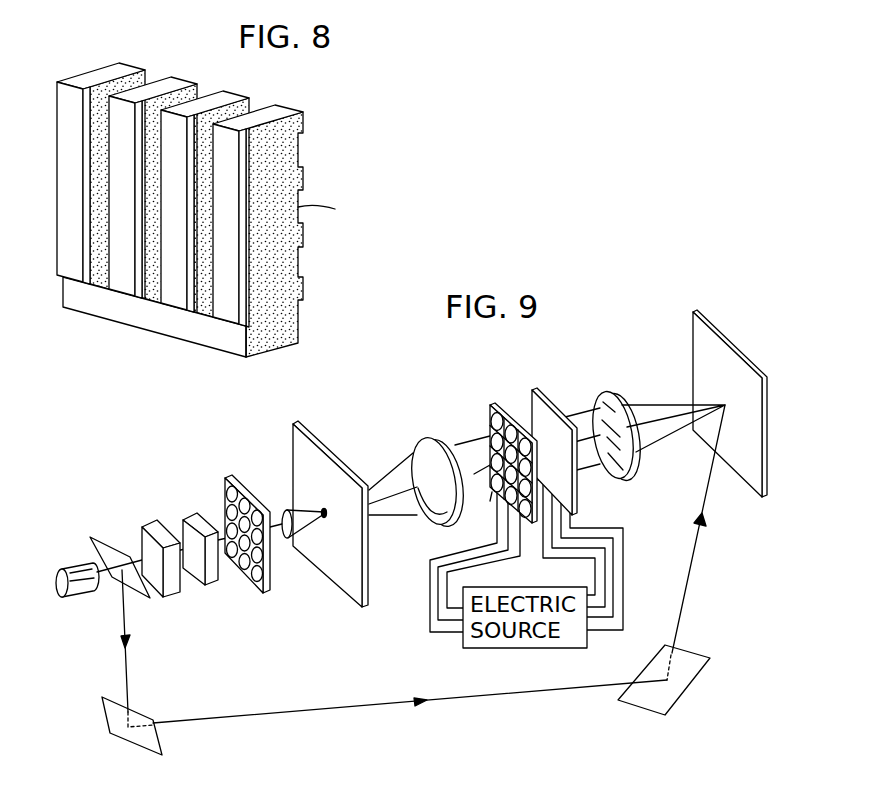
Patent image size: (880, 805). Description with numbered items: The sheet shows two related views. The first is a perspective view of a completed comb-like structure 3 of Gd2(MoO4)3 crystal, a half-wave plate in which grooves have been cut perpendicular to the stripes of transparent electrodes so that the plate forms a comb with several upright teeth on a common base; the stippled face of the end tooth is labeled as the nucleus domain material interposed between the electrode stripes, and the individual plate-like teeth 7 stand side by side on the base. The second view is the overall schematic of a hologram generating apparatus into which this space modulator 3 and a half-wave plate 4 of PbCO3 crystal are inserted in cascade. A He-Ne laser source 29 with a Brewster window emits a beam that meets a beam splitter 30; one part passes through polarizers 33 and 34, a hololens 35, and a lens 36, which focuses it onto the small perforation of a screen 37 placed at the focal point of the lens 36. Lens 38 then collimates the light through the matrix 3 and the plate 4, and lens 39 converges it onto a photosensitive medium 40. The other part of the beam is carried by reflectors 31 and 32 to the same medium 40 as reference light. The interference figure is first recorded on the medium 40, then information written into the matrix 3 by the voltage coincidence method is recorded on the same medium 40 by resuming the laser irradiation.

In FIG. 8, the comb-like structure (space modulator) 3 is at (103, 68).
In FIG. 9, the comb-like structure (space modulator) 3 is at (500, 403).
In FIG. 9, the (λ/2)-plate 4 is at (535, 390).
In FIG. 8, the electrode plate 7 is at (60, 80).
In FIG. 9, the He-Ne laser source 29 is at (67, 567).
In FIG. 9, the beam splitter 30 is at (96, 537).
In FIG. 9, the reflector 31 is at (112, 697).
In FIG. 9, the reflector 32 is at (632, 703).
In FIG. 9, the polarizer 33 is at (152, 524).
In FIG. 9, the polarizer 34 is at (188, 515).
In FIG. 9, the hololens 35 is at (226, 482).
In FIG. 9, the lens 36 is at (284, 511).
In FIG. 9, the screen 37 is at (312, 436).
In FIG. 9, the lens 38 is at (432, 440).
In FIG. 9, the lens 39 is at (605, 393).
In FIG. 9, the photosensitive medium 40 is at (694, 327).